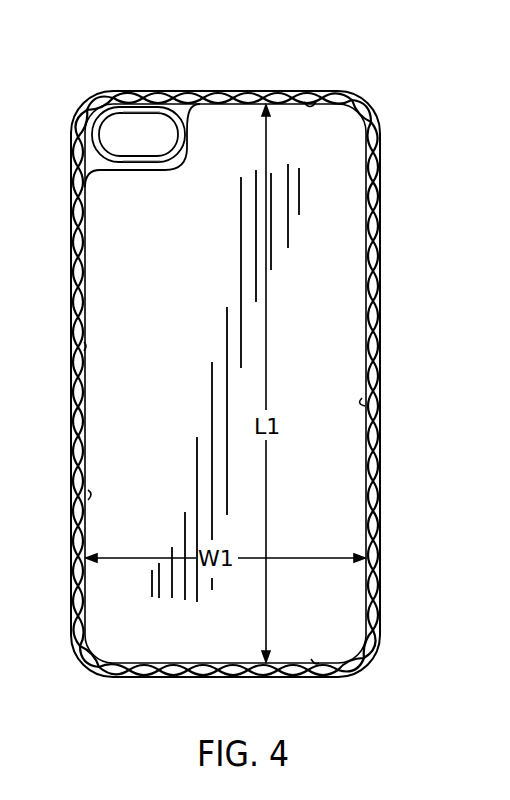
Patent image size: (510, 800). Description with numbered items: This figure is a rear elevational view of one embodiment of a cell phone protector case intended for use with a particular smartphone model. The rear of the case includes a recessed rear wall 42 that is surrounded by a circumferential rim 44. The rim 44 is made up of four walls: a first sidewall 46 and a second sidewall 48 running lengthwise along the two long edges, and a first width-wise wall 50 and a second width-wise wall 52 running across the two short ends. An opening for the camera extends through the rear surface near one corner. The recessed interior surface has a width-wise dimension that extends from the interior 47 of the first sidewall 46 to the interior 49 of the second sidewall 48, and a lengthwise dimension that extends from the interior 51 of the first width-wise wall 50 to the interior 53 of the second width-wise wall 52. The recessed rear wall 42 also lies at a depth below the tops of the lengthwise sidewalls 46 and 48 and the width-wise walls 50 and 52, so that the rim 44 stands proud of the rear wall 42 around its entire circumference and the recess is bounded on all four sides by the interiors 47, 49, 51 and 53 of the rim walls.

The recessed rear wall 42 is at (86, 346).
The circumferential rim 44 is at (351, 96).
The first sidewall 46 is at (78, 436).
The interior of first sidewall 47 is at (92, 497).
The second sidewall 48 is at (380, 330).
The interior of second sidewall 49 is at (367, 405).
The first width-wise wall 50 is at (243, 92).
The interior of first width-wise wall 51 is at (313, 100).
The second width-wise wall 52 is at (170, 677).
The interior of second width-wise wall 53 is at (313, 675).